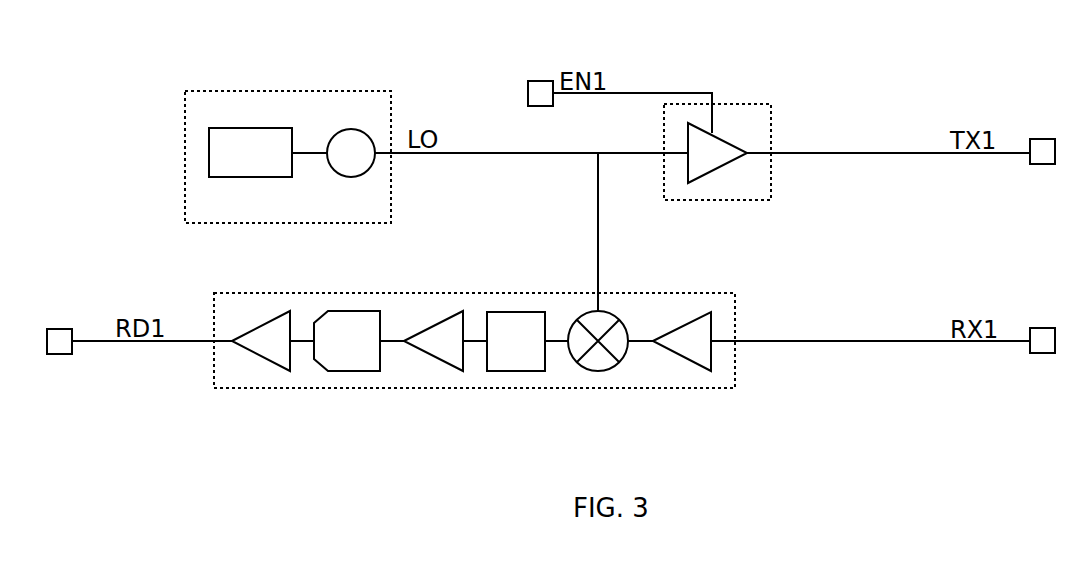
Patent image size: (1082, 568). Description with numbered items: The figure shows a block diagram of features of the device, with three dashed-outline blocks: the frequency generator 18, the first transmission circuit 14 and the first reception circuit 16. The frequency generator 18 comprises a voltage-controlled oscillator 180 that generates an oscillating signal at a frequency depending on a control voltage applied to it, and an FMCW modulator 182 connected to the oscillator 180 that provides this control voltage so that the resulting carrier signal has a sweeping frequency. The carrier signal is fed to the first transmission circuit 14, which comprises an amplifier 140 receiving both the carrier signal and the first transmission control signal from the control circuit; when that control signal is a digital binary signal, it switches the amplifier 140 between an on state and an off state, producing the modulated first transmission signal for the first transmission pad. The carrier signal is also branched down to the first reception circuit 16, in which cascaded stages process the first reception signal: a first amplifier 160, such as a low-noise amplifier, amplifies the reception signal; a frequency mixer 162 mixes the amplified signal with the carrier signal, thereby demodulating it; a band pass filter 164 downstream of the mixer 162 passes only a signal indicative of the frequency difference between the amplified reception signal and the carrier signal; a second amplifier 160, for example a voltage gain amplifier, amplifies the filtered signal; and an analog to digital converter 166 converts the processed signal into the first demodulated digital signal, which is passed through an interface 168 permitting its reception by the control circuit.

The first transmission circuit 14 is at (752, 104).
The amplifier 140 is at (710, 159).
The first reception circuit 16 is at (688, 390).
The amplifier 160 is at (428, 348).
The frequency mixer 162 is at (596, 372).
The band pass filter 164 is at (521, 348).
The analog to digital converter 166 is at (340, 362).
The interface 168 is at (262, 347).
The frequency generator 18 is at (340, 91).
The voltage-controlled oscillator 180 is at (352, 163).
The FMCW modulator 182 is at (245, 140).